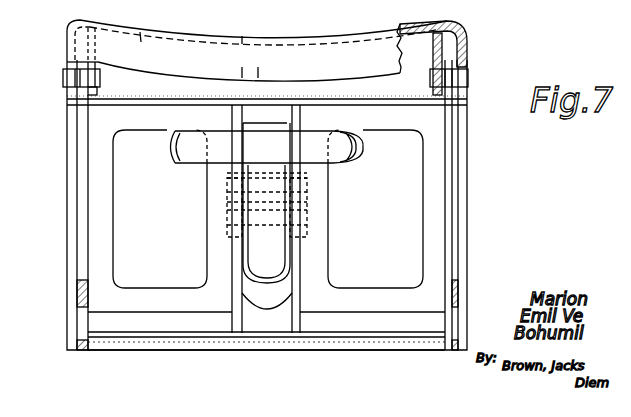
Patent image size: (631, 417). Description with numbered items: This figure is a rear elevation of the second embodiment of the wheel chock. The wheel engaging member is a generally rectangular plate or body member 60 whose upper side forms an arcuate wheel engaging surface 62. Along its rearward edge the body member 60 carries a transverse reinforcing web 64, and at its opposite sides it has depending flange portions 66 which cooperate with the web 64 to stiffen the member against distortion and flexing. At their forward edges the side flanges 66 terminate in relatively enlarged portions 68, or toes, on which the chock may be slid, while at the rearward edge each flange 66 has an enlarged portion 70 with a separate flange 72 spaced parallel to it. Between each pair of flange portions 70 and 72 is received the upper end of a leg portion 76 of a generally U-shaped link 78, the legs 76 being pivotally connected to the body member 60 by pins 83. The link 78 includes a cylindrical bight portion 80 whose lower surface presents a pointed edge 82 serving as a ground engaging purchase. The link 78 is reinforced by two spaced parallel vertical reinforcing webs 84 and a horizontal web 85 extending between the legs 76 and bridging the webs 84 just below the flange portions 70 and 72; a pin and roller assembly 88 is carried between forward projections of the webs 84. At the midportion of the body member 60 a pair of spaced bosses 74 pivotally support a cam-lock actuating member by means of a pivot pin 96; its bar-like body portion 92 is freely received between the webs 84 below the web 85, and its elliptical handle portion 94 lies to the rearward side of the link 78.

The body member 60 is at (468, 25).
The arcuate wheel engaging surface 62 is at (250, 40).
The transverse reinforcing web 64 is at (163, 50).
The depending flange portions 66 is at (70, 198).
The relatively enlarged portions 68 is at (72, 340).
The enlarged portion 70 is at (465, 50).
The flange 72 is at (435, 63).
The spaced bosses 74 is at (227, 235).
The leg portion 76 is at (82, 100).
The U-shaped link 78 is at (185, 359).
The bight portion 80 is at (286, 348).
The pointed edge 82 is at (210, 352).
The pins 83 is at (63, 78).
The reinforcing webs 84 is at (300, 298).
The horizontal web 85 is at (187, 105).
The pin and roller assembly 88 is at (280, 187).
The bar-like body portion 92 is at (272, 254).
The elliptical handle portion 94 is at (182, 163).
The pivot pin 96 is at (282, 216).